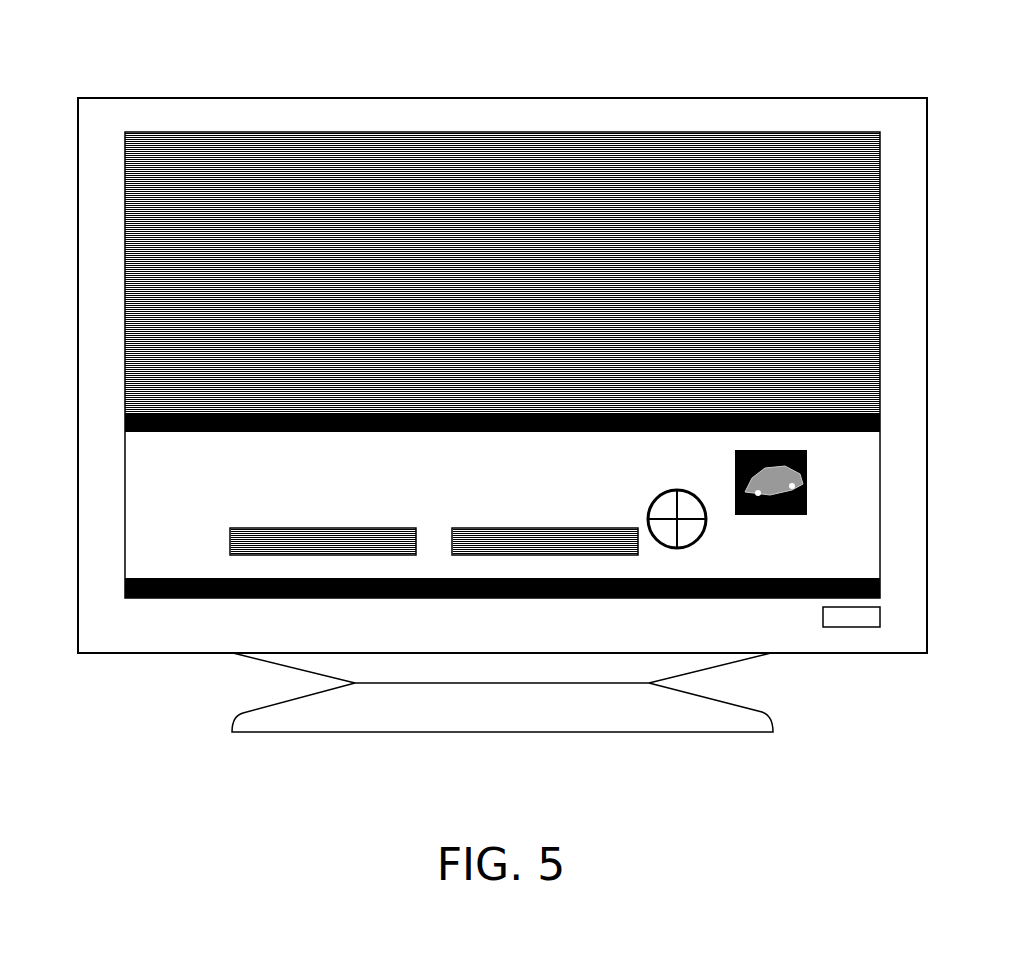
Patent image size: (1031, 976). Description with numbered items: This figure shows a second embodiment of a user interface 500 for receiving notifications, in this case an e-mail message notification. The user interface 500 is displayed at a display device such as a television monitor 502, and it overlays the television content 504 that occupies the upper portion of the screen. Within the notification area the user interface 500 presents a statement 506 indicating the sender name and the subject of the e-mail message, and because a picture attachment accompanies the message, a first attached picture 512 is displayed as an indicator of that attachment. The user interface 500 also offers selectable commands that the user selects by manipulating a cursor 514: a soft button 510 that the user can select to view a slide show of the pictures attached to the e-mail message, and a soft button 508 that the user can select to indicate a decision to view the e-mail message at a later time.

The user interface 500 is at (839, 563).
The television monitor 502 is at (242, 86).
The television content 504 is at (670, 151).
The statement 506 is at (219, 494).
The soft button 508 is at (540, 570).
The soft button 510 is at (320, 574).
The first attached picture 512 is at (824, 468).
The cursor 514 is at (684, 560).